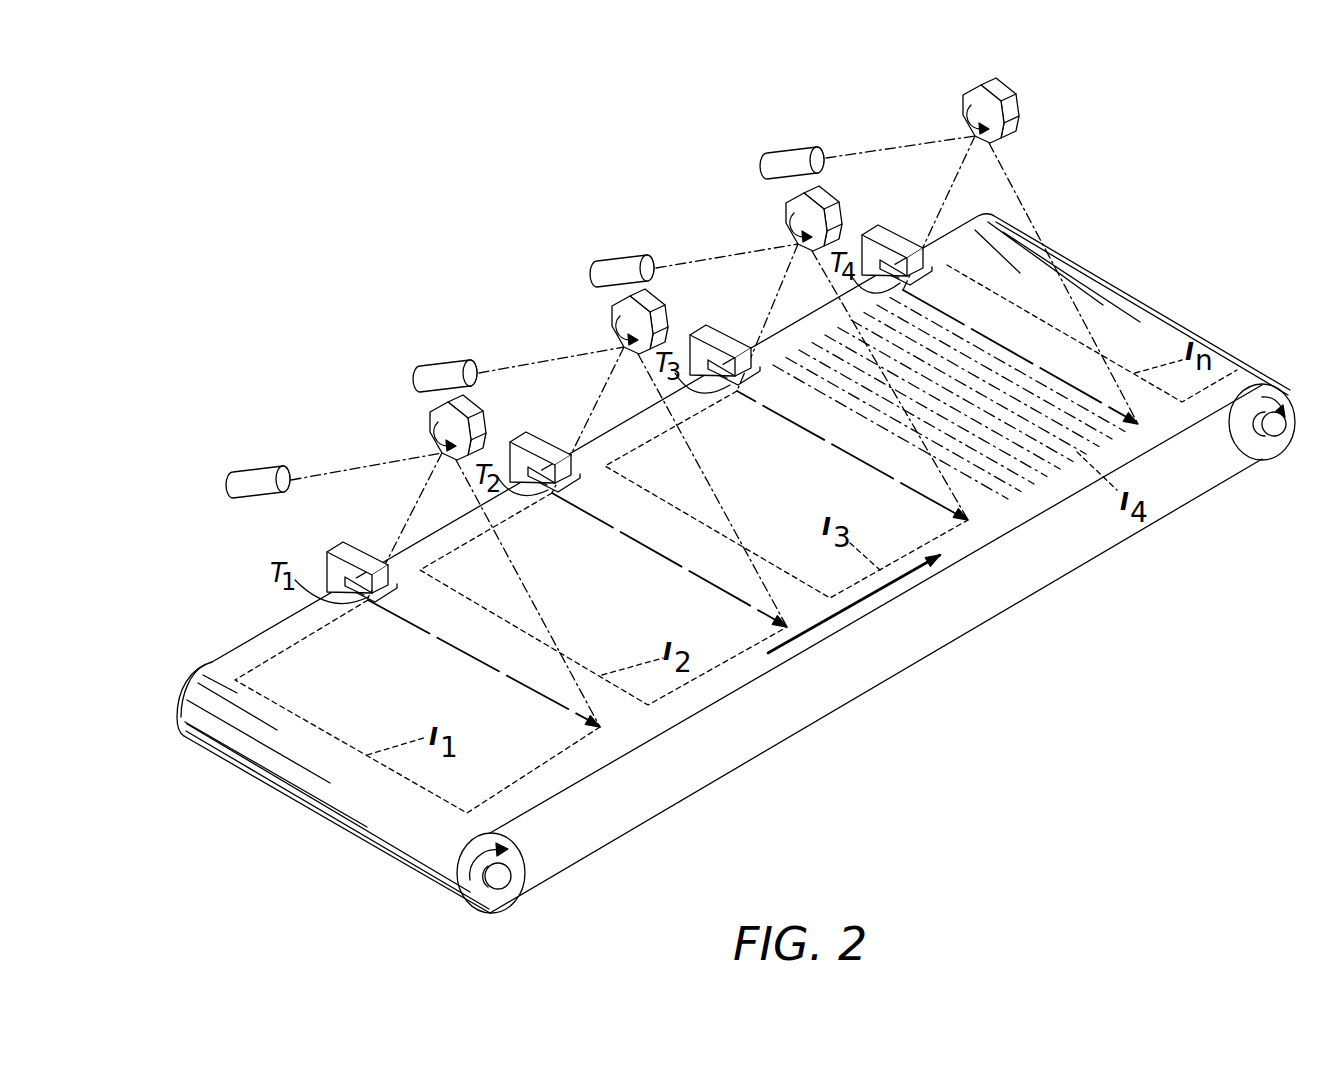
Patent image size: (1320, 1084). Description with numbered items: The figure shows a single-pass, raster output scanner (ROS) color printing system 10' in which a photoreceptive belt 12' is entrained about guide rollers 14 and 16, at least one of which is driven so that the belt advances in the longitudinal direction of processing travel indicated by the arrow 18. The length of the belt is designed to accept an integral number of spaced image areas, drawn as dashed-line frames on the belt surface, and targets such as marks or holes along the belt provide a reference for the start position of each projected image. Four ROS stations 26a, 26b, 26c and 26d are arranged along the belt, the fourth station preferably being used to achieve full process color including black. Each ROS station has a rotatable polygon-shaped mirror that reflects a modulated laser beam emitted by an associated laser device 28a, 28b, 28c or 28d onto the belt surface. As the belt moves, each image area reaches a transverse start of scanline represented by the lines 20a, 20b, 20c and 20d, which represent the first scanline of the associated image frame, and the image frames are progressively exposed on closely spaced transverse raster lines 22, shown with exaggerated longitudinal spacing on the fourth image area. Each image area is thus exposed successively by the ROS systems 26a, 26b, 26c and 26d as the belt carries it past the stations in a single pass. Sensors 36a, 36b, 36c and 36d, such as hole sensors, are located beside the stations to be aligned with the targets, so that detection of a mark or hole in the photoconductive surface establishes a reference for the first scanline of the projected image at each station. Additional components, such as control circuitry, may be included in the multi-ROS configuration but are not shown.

The single-pass ROS color printing system 10' is at (324, 161).
The photoreceptive belt 12' is at (733, 563).
The guide roller 14 is at (513, 865).
The guide roller 16 is at (1253, 448).
The arrow 18 is at (877, 593).
The scanline 20a is at (433, 637).
The scanline 20b is at (617, 530).
The scanline 20c is at (828, 445).
The scanline 20d is at (1000, 345).
The raster lines 22 is at (1093, 435).
The ROS station 26a is at (430, 420).
The ROS station 26b is at (612, 313).
The ROS station 26c is at (786, 208).
The ROS station 26d is at (1012, 131).
The laser device 28a is at (260, 478).
The laser device 28b is at (448, 372).
The laser device 28c is at (625, 265).
The laser device 28d is at (795, 160).
The sensor 36a is at (350, 550).
The sensor 36b is at (535, 440).
The sensor 36c is at (716, 338).
The sensor 36d is at (899, 240).